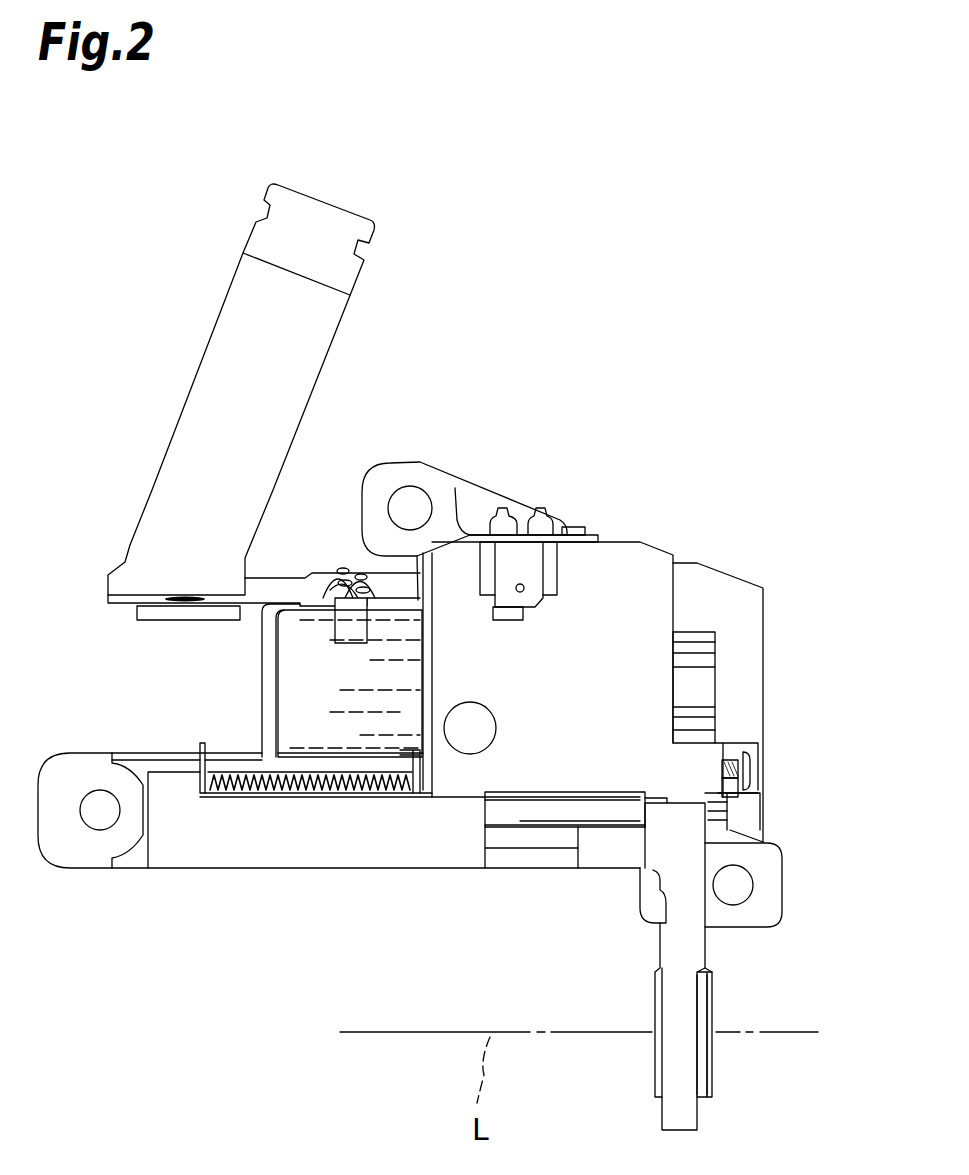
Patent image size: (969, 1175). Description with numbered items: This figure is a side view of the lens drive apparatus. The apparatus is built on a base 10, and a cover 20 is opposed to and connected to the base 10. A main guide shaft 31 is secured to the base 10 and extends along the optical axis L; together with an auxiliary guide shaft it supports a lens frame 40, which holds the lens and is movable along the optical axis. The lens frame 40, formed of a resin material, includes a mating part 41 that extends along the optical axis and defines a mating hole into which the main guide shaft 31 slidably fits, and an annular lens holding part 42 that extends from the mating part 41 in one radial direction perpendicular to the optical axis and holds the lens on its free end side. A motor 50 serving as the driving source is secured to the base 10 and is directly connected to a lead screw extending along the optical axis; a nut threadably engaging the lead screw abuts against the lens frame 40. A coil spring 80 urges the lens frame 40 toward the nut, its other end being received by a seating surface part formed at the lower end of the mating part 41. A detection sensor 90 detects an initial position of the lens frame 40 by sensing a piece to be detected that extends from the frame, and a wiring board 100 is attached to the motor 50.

The base 10 is at (306, 873).
The cover 20 is at (770, 683).
The main guide shaft 31 is at (508, 805).
The lens frame 40 is at (705, 1121).
The mating part 41 is at (610, 845).
The lens holding part 42 is at (688, 1057).
The motor 50 is at (298, 693).
The coil spring 80 is at (252, 766).
The detection sensor 90 is at (518, 556).
The wiring board 100 is at (272, 512).